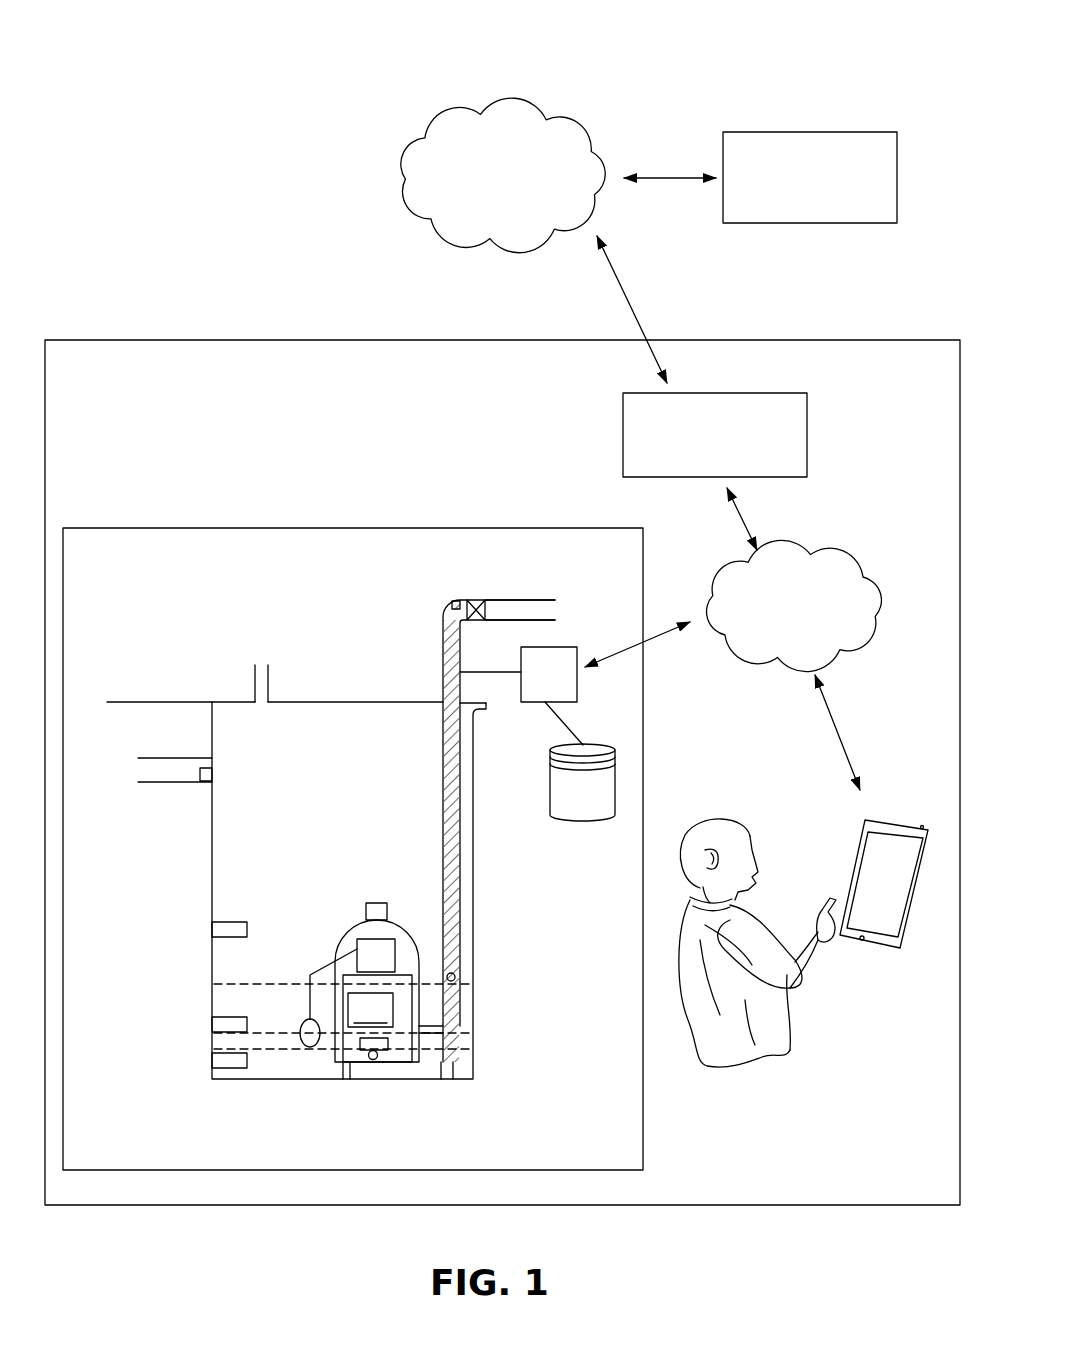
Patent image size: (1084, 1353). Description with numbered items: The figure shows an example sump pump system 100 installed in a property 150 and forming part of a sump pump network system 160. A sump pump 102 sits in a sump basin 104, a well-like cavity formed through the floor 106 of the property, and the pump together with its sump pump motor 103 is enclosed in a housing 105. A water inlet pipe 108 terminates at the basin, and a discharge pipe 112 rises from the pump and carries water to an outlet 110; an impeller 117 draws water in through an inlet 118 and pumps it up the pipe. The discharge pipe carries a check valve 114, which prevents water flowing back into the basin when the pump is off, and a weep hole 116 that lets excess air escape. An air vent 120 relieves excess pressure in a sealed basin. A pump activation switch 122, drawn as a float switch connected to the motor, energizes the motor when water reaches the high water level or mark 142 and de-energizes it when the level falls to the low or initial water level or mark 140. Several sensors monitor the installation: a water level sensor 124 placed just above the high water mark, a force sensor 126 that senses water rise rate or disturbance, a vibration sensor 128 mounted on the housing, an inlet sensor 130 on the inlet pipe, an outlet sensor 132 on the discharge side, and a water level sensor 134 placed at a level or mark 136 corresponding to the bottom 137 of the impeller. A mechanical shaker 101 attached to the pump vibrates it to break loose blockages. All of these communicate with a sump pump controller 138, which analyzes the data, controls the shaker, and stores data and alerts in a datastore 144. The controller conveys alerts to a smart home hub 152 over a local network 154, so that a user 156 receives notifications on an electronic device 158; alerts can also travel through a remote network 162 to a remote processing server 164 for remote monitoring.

The sump pump system 100 is at (312, 527).
The mechanical shaker 101 is at (370, 1010).
The sump pump 102 is at (400, 1020).
The sump pump motor 103 is at (357, 948).
The sump basin 104 is at (329, 802).
The housing 105 is at (415, 944).
The floor 106 is at (137, 702).
The water inlet pipe 108 is at (166, 768).
The outlet 110 is at (545, 612).
The discharge pipe 112 is at (455, 784).
The check valve 114 is at (477, 603).
The weep hole 116 is at (456, 977).
The impeller 117 is at (388, 1050).
The inlet 118 is at (373, 1056).
The air vent 120 is at (255, 680).
The pump activation switch 122 is at (308, 1046).
The water level sensor 124 is at (227, 930).
The force sensor 126 is at (227, 1024).
The vibration sensor 128 is at (385, 912).
The inlet sensor 130 is at (203, 781).
The outlet sensor 132 is at (455, 601).
The water level sensor 134 is at (224, 1068).
The level or mark 136 is at (237, 1046).
The bottom of the impeller 137 is at (361, 1056).
The sump pump controller 138 is at (563, 684).
The low or initial water level or mark 140 is at (268, 1033).
The high water level or mark 142 is at (237, 984).
The datastore 144 is at (603, 808).
The property 150 is at (845, 340).
The smart home hub 152 is at (807, 428).
The local network 154 is at (841, 552).
The user 156 is at (770, 1062).
The electronic device 158 is at (900, 820).
The sump pump network system 160 is at (812, 44).
The remote network 162 is at (532, 103).
The remote processing server 164 is at (898, 160).